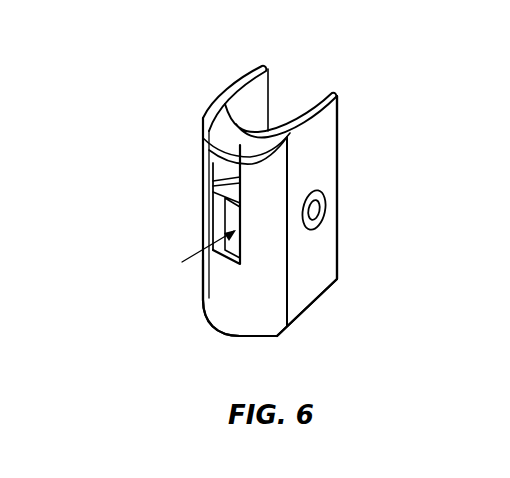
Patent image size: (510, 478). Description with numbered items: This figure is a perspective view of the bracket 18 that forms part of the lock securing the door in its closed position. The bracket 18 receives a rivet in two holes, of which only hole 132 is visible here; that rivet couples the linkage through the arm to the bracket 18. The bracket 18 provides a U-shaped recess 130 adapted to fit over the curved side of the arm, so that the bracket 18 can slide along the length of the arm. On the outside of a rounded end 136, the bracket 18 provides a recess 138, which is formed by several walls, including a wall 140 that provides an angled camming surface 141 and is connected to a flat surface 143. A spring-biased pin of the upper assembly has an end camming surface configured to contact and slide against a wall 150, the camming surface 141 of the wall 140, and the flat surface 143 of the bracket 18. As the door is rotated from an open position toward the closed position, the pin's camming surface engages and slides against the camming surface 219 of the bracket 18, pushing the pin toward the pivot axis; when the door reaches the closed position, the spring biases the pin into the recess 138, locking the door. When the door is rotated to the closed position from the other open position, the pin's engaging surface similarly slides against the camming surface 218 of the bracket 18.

The U-shaped recess 130 is at (323, 50).
The bracket 18 is at (338, 153).
The hole 132 is at (330, 200).
The flat surface 143 is at (215, 163).
The angled camming surface 141 is at (231, 191).
The wall 140 is at (225, 195).
The recess 138 is at (221, 255).
The wall 150 is at (182, 262).
The camming surface 219 is at (218, 273).
The rounded end 136 is at (225, 311).
The camming surface 218 is at (262, 312).